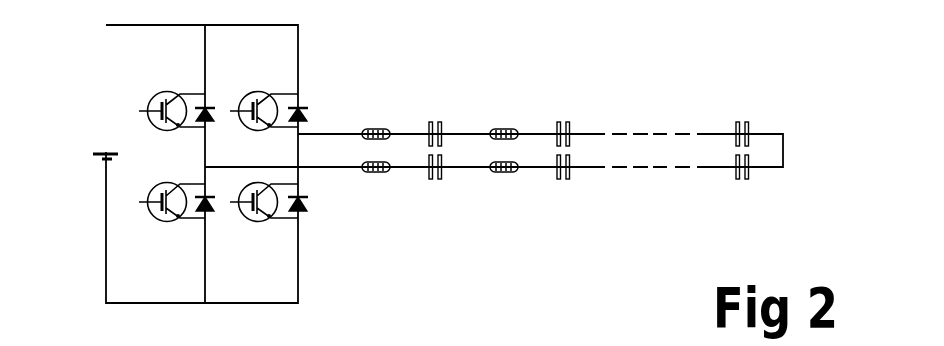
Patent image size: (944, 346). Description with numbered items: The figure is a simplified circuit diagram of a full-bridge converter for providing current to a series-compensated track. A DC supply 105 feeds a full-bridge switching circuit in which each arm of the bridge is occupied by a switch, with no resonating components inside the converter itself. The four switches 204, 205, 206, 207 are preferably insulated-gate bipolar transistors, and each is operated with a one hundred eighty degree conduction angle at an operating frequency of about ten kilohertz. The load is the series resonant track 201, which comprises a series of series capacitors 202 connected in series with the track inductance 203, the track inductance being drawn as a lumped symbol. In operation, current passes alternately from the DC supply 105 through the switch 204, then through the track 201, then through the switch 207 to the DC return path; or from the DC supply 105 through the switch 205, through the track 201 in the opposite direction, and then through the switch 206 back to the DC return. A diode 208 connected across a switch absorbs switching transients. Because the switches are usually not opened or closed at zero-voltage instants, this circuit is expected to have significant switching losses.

The DC supply 105 is at (105, 150).
The series resonant track 201 is at (642, 95).
The series capacitors 202 is at (456, 95).
The track inductance 203 is at (528, 95).
The switch 204 is at (178, 62).
The switch 205 is at (270, 62).
The switch 206 is at (156, 218).
The switch 207 is at (248, 218).
The diode 208 is at (366, 66).